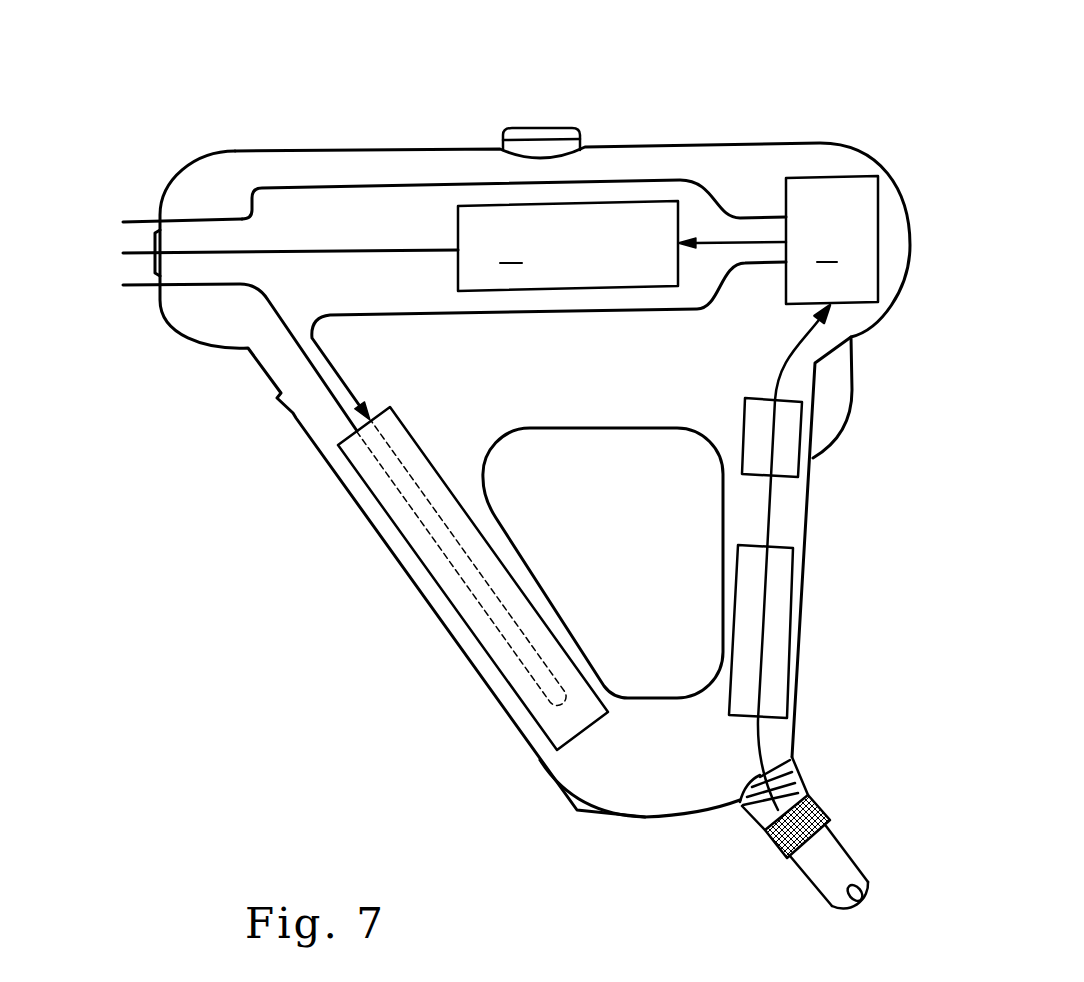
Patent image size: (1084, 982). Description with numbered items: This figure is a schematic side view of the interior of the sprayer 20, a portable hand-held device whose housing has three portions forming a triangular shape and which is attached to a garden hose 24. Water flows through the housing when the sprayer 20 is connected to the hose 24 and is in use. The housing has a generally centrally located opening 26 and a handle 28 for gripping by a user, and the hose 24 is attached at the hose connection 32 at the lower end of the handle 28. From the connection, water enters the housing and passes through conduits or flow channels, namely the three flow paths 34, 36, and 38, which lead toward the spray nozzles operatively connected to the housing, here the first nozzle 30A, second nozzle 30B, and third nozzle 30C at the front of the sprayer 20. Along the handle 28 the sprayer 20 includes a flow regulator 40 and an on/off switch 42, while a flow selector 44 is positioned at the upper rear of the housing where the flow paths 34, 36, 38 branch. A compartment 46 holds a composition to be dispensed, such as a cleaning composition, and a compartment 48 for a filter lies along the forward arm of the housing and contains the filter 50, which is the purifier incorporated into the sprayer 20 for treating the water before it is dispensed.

The sprayer 20 is at (631, 106).
The garden hose 24 is at (817, 862).
The opening 26 is at (590, 578).
The handle 28 is at (785, 522).
The first nozzle 30A is at (142, 219).
The second nozzle 30B is at (250, 253).
The third nozzle 30C is at (199, 353).
The hose connection 32 is at (795, 795).
The flow path 34 is at (735, 212).
The flow path 36 is at (765, 240).
The flow path 38 is at (683, 310).
The flow regulator 40 is at (780, 637).
The on/off switch 42 is at (788, 442).
The flow selector 44 is at (832, 240).
The compartment for a composition 46 is at (568, 246).
The compartment for a filter 48 is at (377, 500).
The filter 50 is at (453, 548).